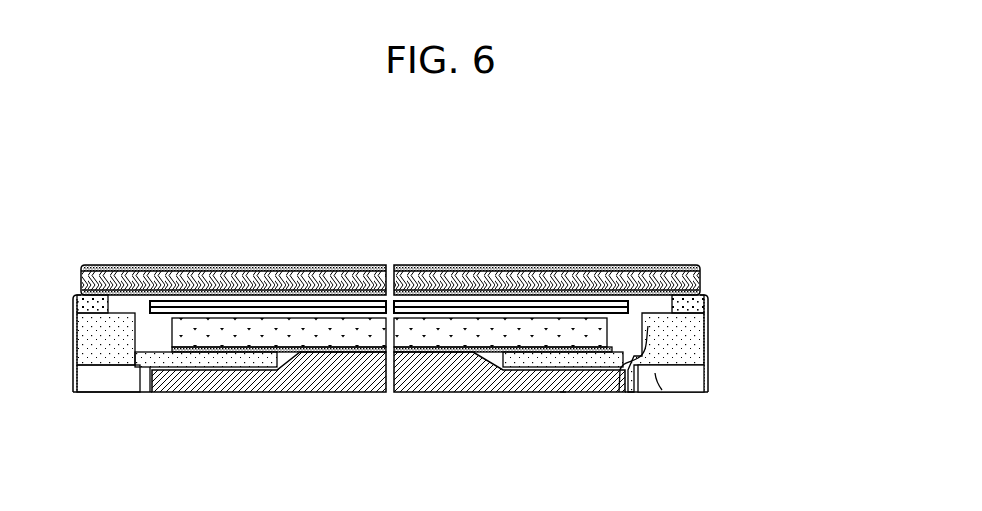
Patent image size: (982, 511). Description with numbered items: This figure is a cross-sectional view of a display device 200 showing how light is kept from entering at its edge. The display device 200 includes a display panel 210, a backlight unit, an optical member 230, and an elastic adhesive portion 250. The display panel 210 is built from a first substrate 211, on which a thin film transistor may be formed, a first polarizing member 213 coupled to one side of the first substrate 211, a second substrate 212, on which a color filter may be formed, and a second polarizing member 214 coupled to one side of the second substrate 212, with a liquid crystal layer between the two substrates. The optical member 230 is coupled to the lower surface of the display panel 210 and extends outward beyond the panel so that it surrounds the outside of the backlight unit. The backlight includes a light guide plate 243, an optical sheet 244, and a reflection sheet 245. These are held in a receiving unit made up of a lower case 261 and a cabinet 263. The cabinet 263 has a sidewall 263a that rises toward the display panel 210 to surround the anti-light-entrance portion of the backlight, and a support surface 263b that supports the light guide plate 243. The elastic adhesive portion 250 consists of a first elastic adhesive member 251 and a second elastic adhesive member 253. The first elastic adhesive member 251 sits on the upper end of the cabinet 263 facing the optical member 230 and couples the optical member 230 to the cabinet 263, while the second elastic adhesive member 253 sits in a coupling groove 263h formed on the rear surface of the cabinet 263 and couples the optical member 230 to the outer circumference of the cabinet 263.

The display device 200 is at (183, 141).
The display panel 210 is at (657, 215).
The first substrate 211 is at (635, 271).
The second substrate 212 is at (583, 271).
The first polarizing member 213 is at (603, 270).
The second polarizing member 214 is at (540, 267).
The optical member 230 is at (706, 294).
The light guide plate 243 is at (483, 330).
The optical sheet 244 is at (640, 300).
The reflection sheet 245 is at (420, 347).
The elastic adhesive portion 250 is at (771, 318).
The first elastic adhesive member 251 is at (710, 318).
The second elastic adhesive member 253 is at (688, 373).
The lower case 261 is at (418, 382).
The cabinet 263 is at (700, 446).
The sidewall 263a is at (619, 393).
The support surface 263b is at (563, 393).
The coupling groove 263h is at (662, 390).